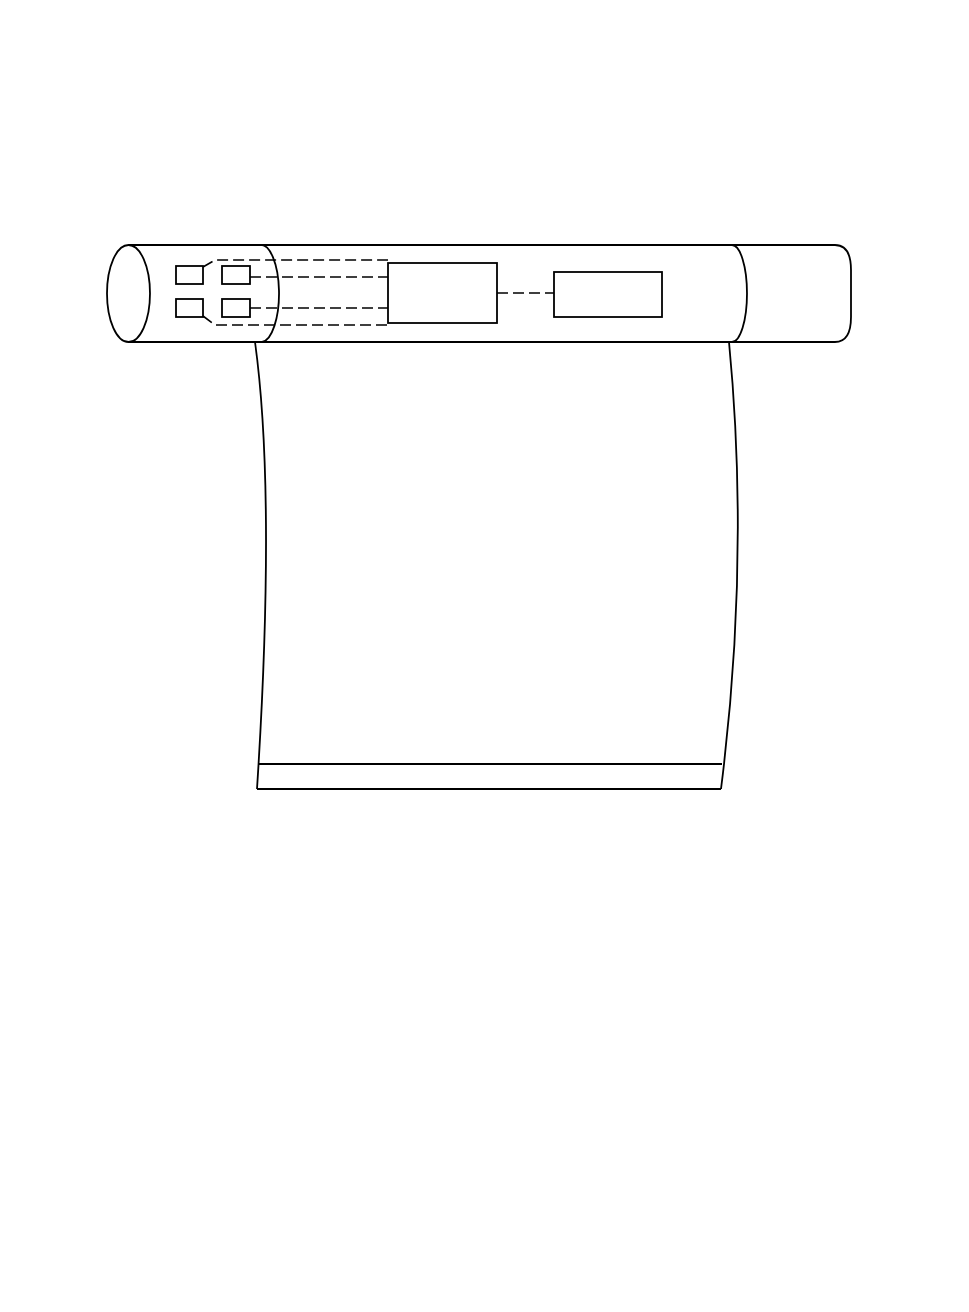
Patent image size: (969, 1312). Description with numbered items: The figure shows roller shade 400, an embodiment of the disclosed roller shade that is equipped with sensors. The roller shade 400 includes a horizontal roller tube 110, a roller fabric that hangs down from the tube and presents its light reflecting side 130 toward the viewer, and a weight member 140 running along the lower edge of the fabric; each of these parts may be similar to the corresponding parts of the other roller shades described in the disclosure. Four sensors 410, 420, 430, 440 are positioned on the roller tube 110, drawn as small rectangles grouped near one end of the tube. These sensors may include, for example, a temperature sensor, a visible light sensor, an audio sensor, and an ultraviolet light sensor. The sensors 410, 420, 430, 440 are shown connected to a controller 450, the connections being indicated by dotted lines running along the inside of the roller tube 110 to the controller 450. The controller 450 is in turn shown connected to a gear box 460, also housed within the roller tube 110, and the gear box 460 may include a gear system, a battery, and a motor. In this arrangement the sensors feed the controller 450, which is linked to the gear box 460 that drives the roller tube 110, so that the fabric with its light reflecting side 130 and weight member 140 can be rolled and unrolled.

The roller shade 400 is at (166, 68).
The roller tube 110 is at (153, 263).
The light reflecting side 130 is at (683, 548).
The weight member 140 is at (565, 775).
The sensor 410 is at (182, 266).
The sensor 420 is at (237, 266).
The sensor 430 is at (185, 317).
The sensor 440 is at (237, 317).
The controller 450 is at (442, 287).
The gear box 460 is at (613, 295).